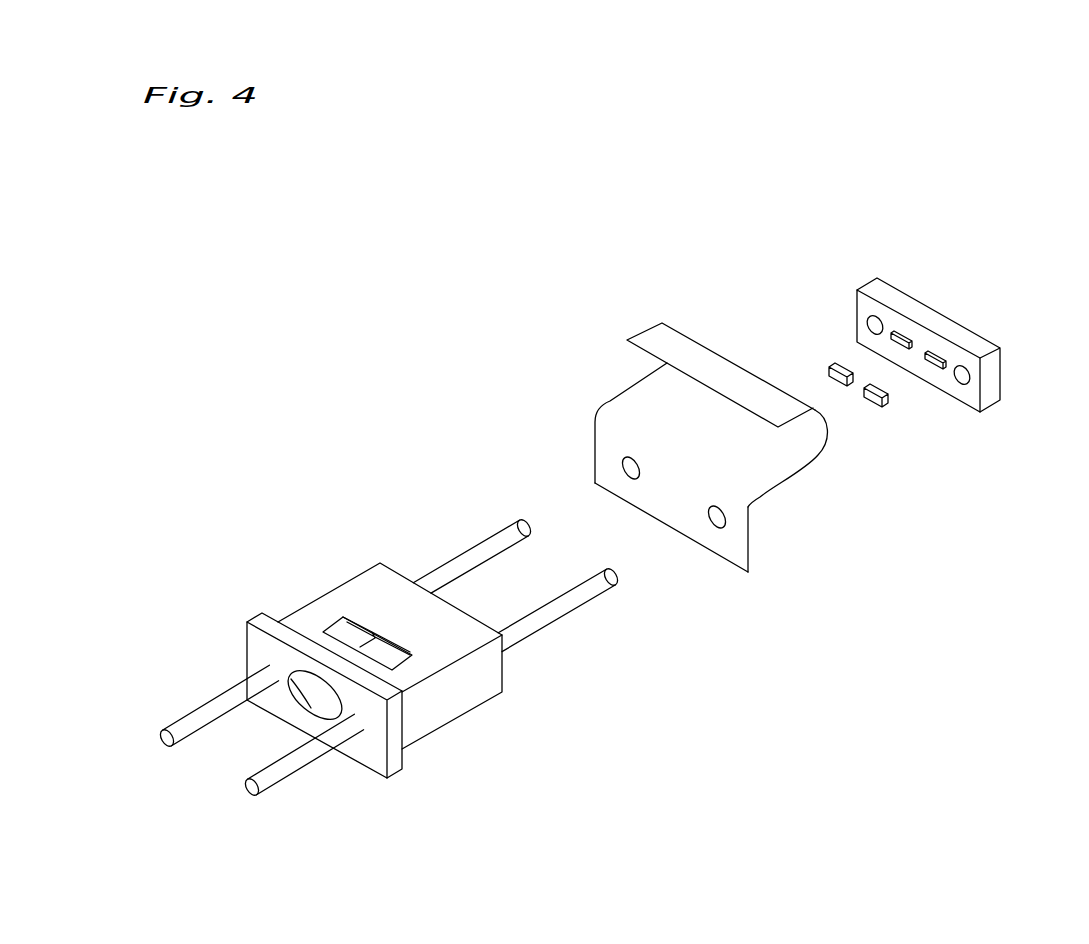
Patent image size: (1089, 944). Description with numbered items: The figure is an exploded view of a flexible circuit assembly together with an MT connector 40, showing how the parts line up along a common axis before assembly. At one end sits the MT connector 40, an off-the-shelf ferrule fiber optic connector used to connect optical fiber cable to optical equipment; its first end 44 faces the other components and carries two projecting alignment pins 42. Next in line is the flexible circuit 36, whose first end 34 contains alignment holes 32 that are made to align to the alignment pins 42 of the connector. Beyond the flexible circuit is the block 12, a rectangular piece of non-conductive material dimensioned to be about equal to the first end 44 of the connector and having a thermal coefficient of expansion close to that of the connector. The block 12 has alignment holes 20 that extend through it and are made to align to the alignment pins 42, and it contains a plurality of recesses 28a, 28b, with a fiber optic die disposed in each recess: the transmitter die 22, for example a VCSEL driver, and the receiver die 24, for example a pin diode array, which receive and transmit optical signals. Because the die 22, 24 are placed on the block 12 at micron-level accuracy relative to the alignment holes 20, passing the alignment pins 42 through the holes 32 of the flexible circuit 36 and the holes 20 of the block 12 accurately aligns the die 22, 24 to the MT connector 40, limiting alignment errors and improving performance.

The block 12 is at (963, 410).
The alignment holes 20 is at (873, 312).
The transmitter die 22 is at (830, 365).
The receiver die 24 is at (874, 407).
The recess 28a is at (902, 337).
The recess 28b is at (936, 352).
The alignment holes 32 is at (725, 520).
The first end 34 is at (723, 558).
The flexible circuit 36 is at (612, 400).
The MT connector 40 is at (288, 712).
The alignment pins 42 is at (281, 787).
The first end 44 is at (404, 572).